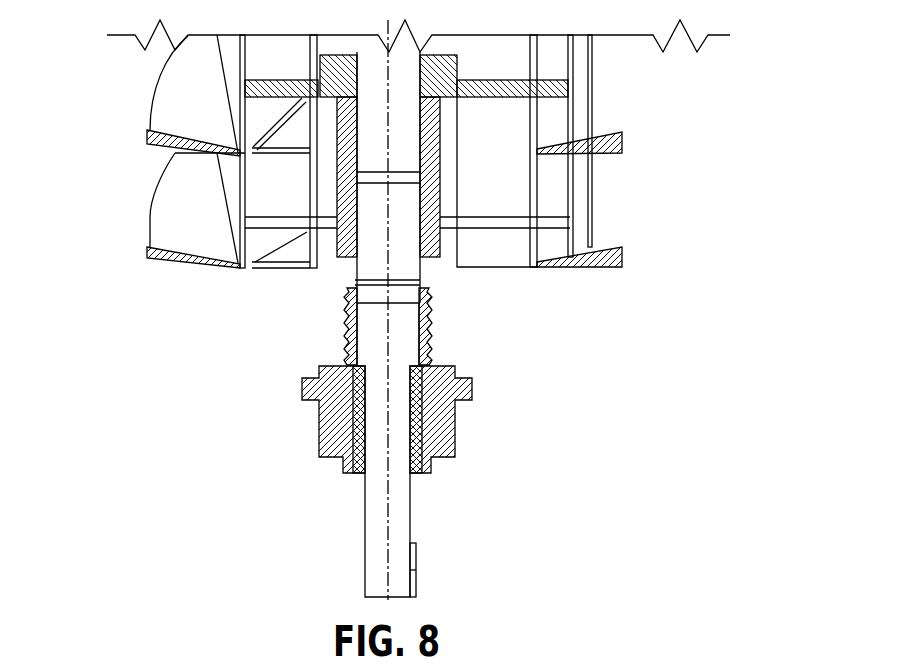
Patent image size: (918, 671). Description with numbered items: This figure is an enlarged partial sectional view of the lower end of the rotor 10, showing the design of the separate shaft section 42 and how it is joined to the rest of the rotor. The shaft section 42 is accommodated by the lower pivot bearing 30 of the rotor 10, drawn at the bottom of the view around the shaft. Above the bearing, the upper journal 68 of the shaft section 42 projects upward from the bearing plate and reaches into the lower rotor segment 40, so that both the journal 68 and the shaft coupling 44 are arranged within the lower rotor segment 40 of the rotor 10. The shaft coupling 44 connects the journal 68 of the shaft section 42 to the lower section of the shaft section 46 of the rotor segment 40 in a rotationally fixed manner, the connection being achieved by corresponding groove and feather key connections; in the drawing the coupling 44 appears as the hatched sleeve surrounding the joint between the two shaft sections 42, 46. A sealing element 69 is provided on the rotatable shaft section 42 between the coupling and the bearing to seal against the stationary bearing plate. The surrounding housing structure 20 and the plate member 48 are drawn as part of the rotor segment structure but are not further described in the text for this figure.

The rotor 10 is at (730, 102).
The housing 20 is at (170, 228).
The lower pivot bearing 30 is at (450, 423).
The lower rotor segment 40 is at (250, 88).
The shaft section 42 is at (403, 505).
The shaft coupling 44 is at (347, 220).
The shaft section of the lower rotor segment 46 is at (415, 140).
The plate 48 is at (513, 82).
The upper journal 68 is at (368, 237).
The sealing element 69 is at (427, 306).